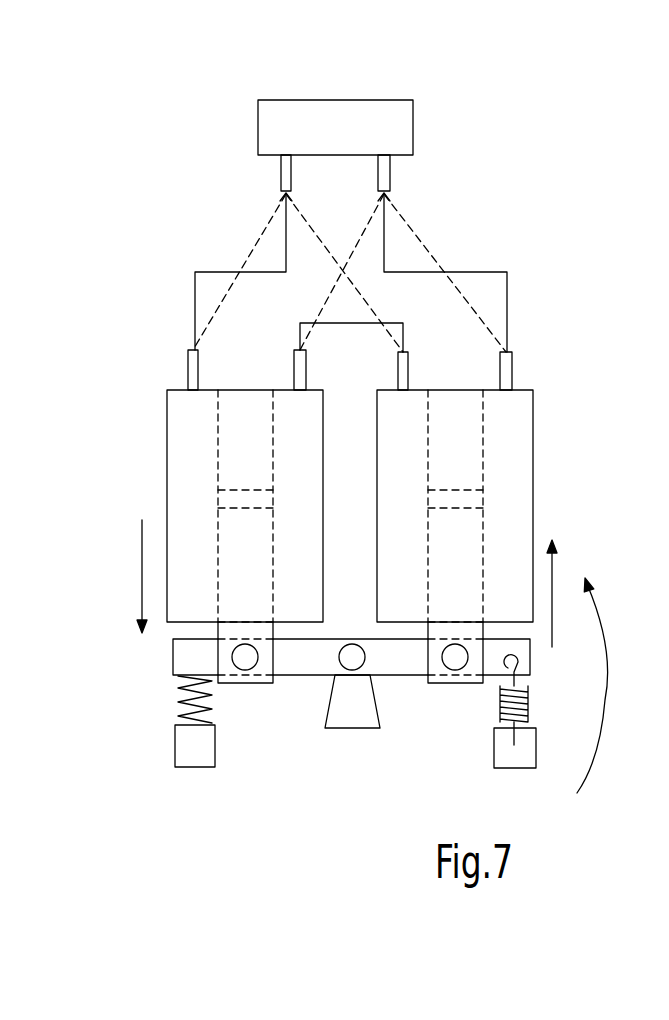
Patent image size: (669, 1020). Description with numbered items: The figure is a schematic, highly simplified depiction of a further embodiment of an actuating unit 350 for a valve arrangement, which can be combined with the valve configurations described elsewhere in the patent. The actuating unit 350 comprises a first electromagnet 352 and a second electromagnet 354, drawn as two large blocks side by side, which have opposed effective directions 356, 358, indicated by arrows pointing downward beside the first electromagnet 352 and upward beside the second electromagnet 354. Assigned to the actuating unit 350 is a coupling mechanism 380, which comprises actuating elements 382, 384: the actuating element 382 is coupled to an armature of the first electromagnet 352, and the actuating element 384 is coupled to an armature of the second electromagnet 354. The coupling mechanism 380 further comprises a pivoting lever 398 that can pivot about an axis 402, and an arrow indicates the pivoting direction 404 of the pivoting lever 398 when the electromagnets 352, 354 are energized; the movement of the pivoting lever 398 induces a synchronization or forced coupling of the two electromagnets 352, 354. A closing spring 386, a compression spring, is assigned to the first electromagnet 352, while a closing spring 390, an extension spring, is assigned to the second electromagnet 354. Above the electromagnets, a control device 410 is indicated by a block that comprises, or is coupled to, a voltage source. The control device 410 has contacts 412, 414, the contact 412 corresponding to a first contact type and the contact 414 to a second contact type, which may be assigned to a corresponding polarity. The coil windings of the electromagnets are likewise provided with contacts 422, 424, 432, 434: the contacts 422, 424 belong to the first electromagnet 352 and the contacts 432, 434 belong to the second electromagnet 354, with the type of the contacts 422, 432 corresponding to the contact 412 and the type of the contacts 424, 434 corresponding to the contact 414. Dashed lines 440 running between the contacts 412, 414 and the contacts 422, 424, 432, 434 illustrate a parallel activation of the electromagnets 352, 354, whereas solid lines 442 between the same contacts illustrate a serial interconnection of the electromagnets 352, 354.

The actuating unit 350 is at (462, 137).
The control device 410 is at (338, 113).
The contact 412 is at (283, 168).
The contact 414 is at (385, 170).
The solid lines 442 is at (210, 272).
The dashed lines 440 is at (418, 233).
The contact 422 is at (192, 368).
The contact 424 is at (297, 380).
The contact 432 is at (402, 380).
The contact 434 is at (506, 378).
The first electromagnet 352 is at (160, 480).
The second electromagnet 354 is at (540, 478).
The effective direction 356 is at (142, 572).
The effective direction 358 is at (552, 598).
The coupling mechanism 380 is at (297, 730).
The actuating element 382 is at (232, 628).
The actuating element 384 is at (480, 637).
The closing spring 386 is at (178, 702).
The closing spring 390 is at (521, 698).
The pivoting lever 398 is at (302, 655).
The axis 402 is at (352, 660).
The pivoting direction 404 is at (607, 680).